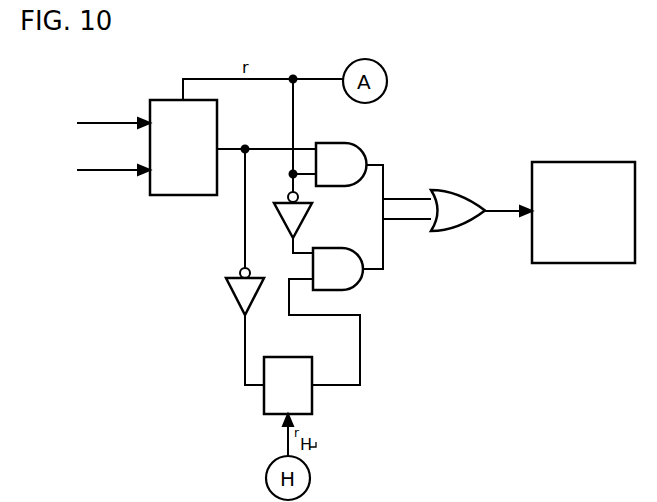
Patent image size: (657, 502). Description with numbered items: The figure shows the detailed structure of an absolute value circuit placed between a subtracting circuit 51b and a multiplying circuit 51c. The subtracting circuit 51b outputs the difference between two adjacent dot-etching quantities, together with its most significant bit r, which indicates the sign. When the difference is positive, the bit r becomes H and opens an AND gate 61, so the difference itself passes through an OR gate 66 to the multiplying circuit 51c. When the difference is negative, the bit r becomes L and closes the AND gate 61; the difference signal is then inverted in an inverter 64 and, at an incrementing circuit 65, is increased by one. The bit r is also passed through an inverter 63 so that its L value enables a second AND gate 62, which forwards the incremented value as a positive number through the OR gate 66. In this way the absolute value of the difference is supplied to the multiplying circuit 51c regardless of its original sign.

The subtracting circuit 51b is at (180, 191).
The multiplying circuit 51c is at (573, 170).
The AND gate 61 is at (353, 152).
The AND gate 62 is at (332, 255).
The inverter 63 is at (299, 220).
The inverter 64 is at (234, 288).
The incrementing circuit 65 is at (268, 405).
The OR gate 66 is at (452, 193).